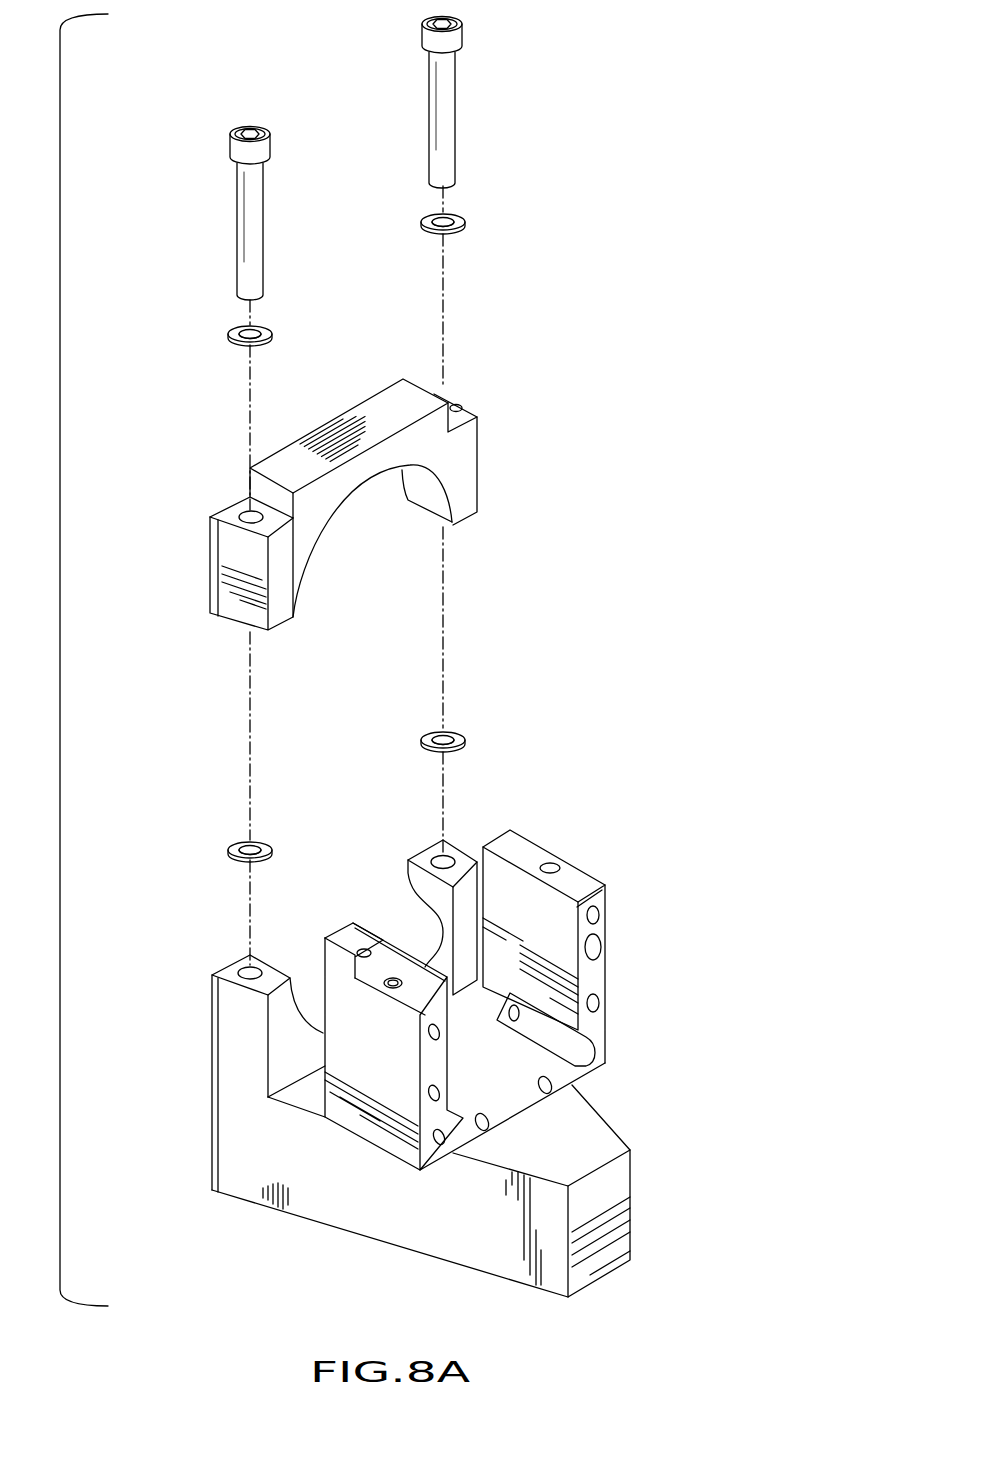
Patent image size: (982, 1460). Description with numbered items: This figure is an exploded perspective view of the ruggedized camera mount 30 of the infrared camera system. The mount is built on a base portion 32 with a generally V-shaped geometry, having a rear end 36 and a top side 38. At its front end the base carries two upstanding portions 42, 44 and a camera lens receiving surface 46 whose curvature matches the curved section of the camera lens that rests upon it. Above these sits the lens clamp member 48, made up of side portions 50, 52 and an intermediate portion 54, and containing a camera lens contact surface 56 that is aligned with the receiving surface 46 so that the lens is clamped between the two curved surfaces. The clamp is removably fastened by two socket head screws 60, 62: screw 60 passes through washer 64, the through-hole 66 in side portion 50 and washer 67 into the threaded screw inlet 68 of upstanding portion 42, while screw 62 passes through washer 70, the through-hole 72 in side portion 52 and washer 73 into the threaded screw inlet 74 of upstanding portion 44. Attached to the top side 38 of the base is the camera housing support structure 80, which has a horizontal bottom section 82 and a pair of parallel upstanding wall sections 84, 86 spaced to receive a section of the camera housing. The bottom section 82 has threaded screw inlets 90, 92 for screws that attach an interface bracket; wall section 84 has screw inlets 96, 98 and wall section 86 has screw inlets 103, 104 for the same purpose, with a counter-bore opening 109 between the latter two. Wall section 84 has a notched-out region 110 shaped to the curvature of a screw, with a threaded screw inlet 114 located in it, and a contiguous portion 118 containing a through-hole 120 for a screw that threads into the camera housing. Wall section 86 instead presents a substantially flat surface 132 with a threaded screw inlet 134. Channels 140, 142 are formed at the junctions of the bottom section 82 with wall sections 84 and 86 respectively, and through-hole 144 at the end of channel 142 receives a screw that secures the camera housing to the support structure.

The ruggedized camera mount 30 is at (58, 660).
The base portion 32 is at (298, 1218).
The rear end 36 is at (612, 1255).
The top side 38 is at (585, 1160).
The upstanding portion 42 is at (230, 1074).
The upstanding portion 44 is at (460, 848).
The camera lens receiving surface 46 is at (417, 883).
The lens clamp member 48 is at (368, 412).
The side portion 50 is at (221, 598).
The side portion 52 is at (481, 447).
The intermediate portion 54 is at (361, 478).
The camera lens contact surface 56 is at (427, 493).
The screw 60 is at (238, 192).
The screw 62 is at (458, 95).
The washer 64 is at (234, 333).
The through-hole 66 is at (245, 515).
The washer 67 is at (236, 845).
The threaded screw inlet 68 is at (242, 967).
The washer 70 is at (466, 222).
The through-hole 72 is at (452, 397).
The washer 73 is at (458, 733).
The threaded screw inlet 74 is at (438, 857).
The camera housing support structure 80 is at (608, 1035).
The horizontal bottom section 82 is at (516, 1107).
The upstanding wall section 84 is at (370, 1127).
The upstanding wall section 86 is at (607, 885).
The threaded screw inlet 90 is at (482, 1125).
The threaded screw inlet 92 is at (552, 1088).
The screw inlet 96 is at (440, 1033).
The screw inlet 98 is at (430, 1100).
The screw inlet 103 is at (600, 915).
The screw inlet 104 is at (600, 1003).
The counter-bore opening 109 is at (600, 948).
The notched-out region 110 is at (418, 993).
The threaded screw inlet 114 is at (358, 949).
The portion 118 is at (340, 940).
The through-hole 120 is at (393, 977).
The substantially flat surface 132 is at (580, 877).
The threaded screw inlet 134 is at (552, 866).
The channel 140 is at (446, 1135).
The channel 142 is at (588, 1048).
The through-hole 144 is at (514, 1010).